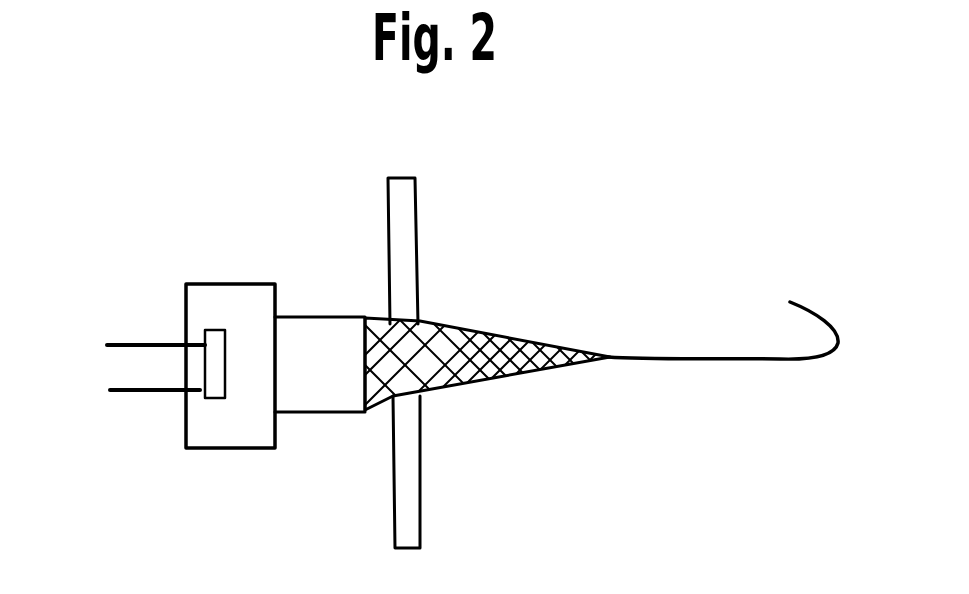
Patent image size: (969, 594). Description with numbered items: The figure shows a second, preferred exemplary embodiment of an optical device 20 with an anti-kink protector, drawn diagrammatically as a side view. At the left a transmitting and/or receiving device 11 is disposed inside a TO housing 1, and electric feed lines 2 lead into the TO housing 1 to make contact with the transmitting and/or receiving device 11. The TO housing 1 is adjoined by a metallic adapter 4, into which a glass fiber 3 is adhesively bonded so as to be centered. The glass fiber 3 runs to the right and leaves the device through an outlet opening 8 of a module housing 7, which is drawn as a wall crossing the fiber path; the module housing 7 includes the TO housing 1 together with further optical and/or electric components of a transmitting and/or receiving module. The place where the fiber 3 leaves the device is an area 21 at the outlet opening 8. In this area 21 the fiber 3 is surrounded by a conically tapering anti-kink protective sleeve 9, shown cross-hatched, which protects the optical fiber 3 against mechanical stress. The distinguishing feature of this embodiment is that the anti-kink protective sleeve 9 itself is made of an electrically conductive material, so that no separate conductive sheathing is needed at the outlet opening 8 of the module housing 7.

The TO housing 1 is at (230, 433).
The electric feed lines 2 is at (140, 393).
The glass fiber 3 is at (679, 362).
The metallic adapter 4 is at (335, 395).
The module housing 7 is at (410, 490).
The outlet opening 8 is at (437, 327).
The anti-kink protective sleeve 9 is at (487, 337).
The transmitting and/or receiving device 11 is at (205, 336).
The optical device 20 is at (253, 246).
The area 21 is at (457, 308).